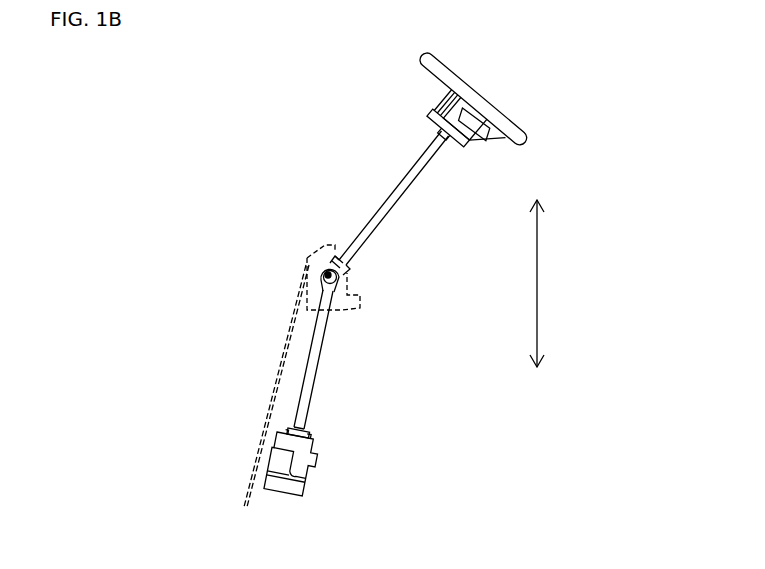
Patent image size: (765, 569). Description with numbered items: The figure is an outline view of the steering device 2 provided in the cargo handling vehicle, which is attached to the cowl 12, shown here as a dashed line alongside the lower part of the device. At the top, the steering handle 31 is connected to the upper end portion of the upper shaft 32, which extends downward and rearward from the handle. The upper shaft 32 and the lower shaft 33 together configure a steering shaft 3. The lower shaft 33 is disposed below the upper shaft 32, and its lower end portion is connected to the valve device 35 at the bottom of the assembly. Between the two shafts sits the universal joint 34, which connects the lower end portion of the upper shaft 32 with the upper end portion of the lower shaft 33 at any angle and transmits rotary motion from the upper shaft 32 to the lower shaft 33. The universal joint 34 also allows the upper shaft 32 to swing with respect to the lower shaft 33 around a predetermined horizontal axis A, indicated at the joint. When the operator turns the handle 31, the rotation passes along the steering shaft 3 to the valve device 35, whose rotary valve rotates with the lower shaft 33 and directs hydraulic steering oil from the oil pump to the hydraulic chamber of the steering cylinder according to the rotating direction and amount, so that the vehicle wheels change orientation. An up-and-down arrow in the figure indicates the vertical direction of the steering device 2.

The steering device 2 is at (272, 143).
The steering shaft 3 is at (405, 203).
The cowl 12 is at (291, 344).
The steering handle 31 is at (425, 62).
The upper shaft 32 is at (402, 190).
The lower shaft 33 is at (314, 352).
The universal joint 34 is at (342, 277).
The valve device 35 is at (310, 462).
The horizontal axis A is at (322, 277).